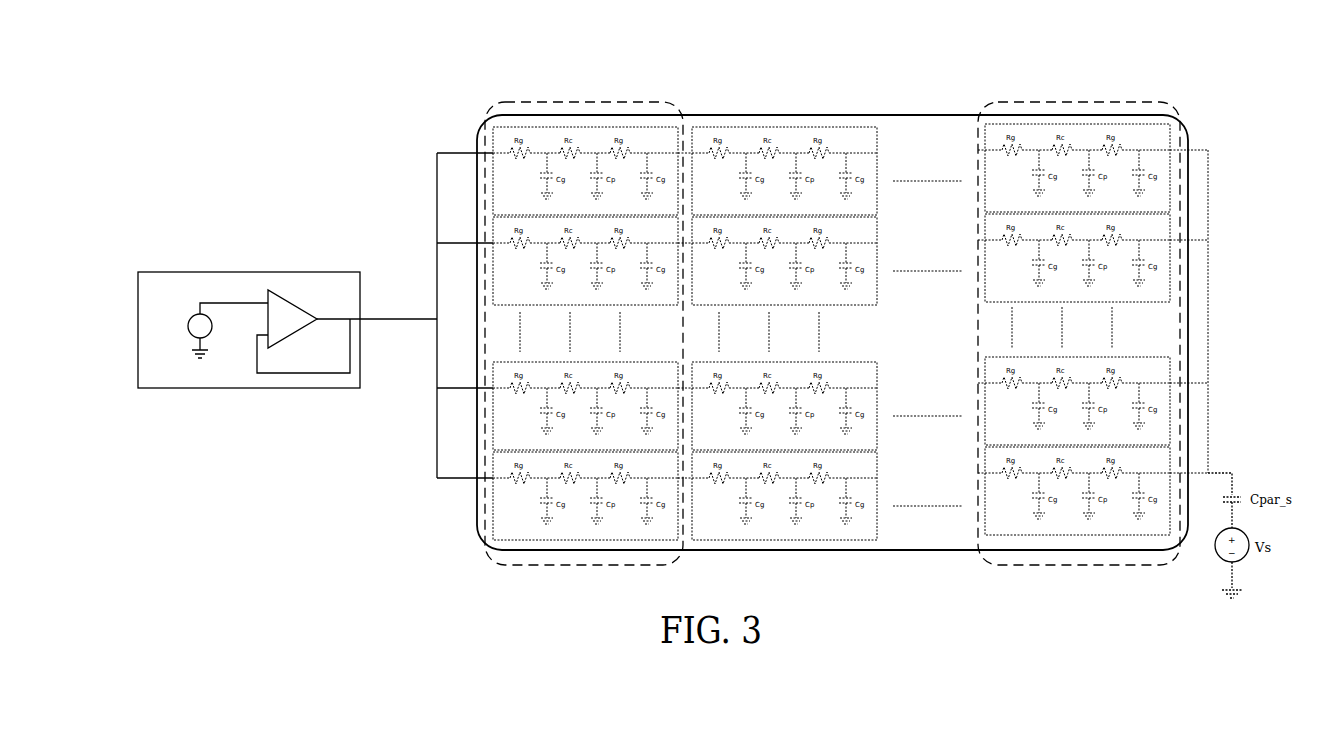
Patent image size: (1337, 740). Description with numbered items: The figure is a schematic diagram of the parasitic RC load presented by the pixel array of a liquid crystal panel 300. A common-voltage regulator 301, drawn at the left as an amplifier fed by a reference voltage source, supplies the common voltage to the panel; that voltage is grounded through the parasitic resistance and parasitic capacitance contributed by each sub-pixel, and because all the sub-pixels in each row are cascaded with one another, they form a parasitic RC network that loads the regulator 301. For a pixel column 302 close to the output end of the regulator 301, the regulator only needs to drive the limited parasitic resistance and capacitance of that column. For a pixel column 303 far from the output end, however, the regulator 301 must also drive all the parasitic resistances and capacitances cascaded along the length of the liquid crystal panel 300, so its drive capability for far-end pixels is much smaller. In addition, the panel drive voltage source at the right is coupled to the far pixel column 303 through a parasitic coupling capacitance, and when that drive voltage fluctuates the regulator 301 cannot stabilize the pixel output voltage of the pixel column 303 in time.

The liquid crystal panel 300 is at (830, 115).
The VCOM regulator 301 is at (360, 288).
The pixel column 302 is at (293, 338).
The pixel column 303 is at (1090, 101).